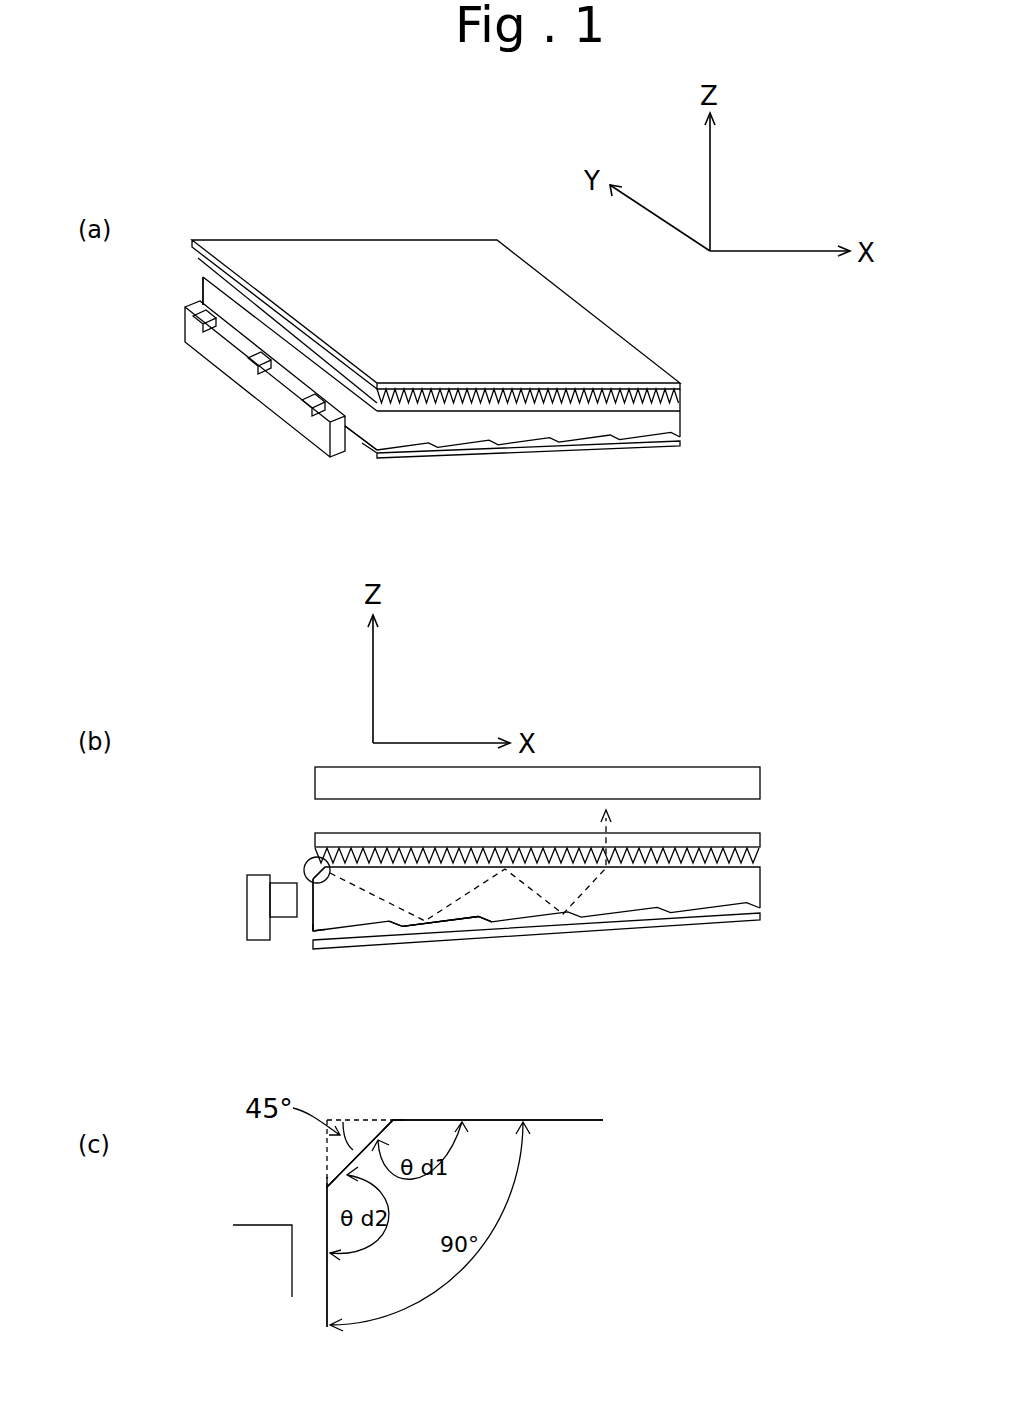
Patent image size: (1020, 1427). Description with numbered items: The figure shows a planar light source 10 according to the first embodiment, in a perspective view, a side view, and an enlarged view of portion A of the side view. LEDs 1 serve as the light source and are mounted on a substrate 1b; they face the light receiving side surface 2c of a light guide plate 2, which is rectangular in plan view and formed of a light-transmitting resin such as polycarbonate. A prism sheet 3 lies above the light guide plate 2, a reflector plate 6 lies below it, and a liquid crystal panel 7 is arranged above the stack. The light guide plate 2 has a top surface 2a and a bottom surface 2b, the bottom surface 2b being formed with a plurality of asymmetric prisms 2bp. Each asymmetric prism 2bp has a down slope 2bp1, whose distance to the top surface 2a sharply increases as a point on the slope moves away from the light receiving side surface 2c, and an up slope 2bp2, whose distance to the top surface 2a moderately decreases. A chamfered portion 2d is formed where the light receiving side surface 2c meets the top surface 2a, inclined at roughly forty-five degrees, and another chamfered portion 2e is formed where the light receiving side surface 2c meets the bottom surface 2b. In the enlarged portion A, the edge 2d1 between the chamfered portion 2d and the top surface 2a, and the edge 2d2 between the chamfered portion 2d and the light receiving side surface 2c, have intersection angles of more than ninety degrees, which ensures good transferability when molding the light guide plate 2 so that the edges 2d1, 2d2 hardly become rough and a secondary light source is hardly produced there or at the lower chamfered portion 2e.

The planar light source 10 is at (427, 204).
The LEDs 1 is at (257, 362).
The substrate 1b is at (283, 400).
The light guide plate 2 is at (667, 430).
The top surface 2a is at (662, 410).
The bottom surface 2b is at (520, 449).
The asymmetric prisms 2bp is at (566, 977).
The down slope 2bp1 is at (466, 930).
The up slope 2bp2 is at (487, 922).
The light receiving side surface 2c is at (350, 436).
The chamfered portion 2d is at (312, 858).
The edge 2d1 is at (393, 1118).
The edge 2d2 is at (327, 1187).
The chamfered portion 2e is at (313, 932).
The prism sheet 3 is at (558, 320).
The reflector plate 6 is at (615, 452).
The liquid crystal panel 7 is at (757, 767).
The portion A is at (305, 860).